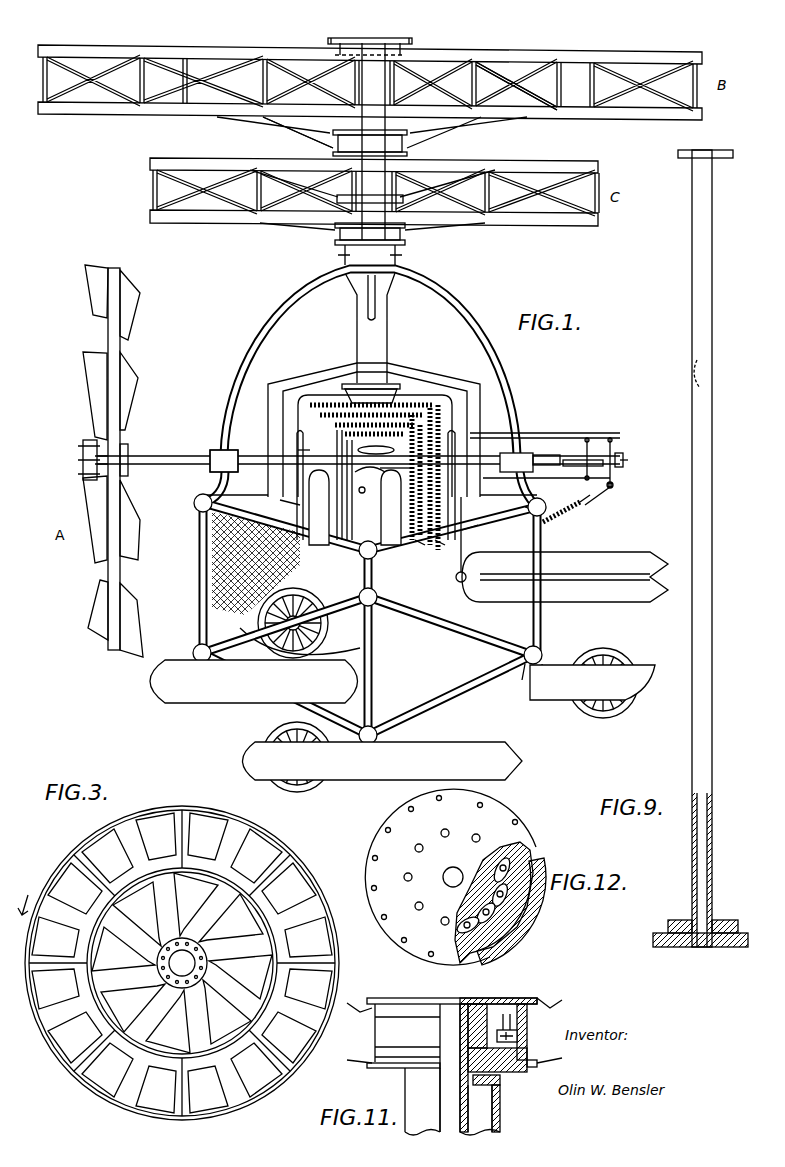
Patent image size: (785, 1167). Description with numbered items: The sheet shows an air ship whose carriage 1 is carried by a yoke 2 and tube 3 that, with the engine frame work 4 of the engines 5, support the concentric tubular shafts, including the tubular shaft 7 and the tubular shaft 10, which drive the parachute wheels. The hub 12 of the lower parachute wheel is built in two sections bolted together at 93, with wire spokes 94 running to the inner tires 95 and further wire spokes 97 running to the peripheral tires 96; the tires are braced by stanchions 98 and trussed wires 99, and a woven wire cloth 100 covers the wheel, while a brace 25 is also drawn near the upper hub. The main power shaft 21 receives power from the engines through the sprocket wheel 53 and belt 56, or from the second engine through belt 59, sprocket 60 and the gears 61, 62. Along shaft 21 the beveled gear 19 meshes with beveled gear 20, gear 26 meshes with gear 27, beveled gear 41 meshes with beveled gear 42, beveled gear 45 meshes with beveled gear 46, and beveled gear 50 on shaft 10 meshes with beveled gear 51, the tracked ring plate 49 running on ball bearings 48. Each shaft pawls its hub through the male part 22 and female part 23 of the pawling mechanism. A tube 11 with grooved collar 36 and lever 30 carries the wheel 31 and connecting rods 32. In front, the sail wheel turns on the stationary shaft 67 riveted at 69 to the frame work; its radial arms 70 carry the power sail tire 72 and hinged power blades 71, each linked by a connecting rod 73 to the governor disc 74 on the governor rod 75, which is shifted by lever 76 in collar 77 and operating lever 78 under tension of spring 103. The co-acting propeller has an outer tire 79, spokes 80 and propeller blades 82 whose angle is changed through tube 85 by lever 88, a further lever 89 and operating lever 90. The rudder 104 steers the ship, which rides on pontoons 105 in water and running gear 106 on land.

In FIG. 1, the carriage 1 is at (505, 400).
In FIG. 1, the yoke 2 is at (340, 255).
In FIG. 1, the tube 3 is at (357, 333).
In FIG. 1, the engine frame work 4 is at (445, 372).
In FIG. 1, the engines 5 is at (355, 507).
In FIG. 11, the tubular shaft 7 is at (492, 1115).
In FIG. 9, the tubular shaft 10 is at (712, 480).
In FIG. 1, the tube 11 is at (372, 45).
In FIG. 1, the hub 12 is at (404, 200).
In FIG. 11, the hub 12 is at (420, 1085).
In FIG. 1, the beveled gear 19 is at (322, 413).
In FIG. 1, the beveled gear 20 is at (459, 555).
In FIG. 1, the main power shaft 21 is at (300, 455).
In FIG. 12, the male part of the pawling mechanism 22 is at (520, 852).
In FIG. 11, the male part of the pawling mechanism 22 is at (507, 1014).
In FIG. 1, the female part of the pawl 23 is at (412, 141).
In FIG. 12, the female part of the pawl 23 is at (530, 905).
In FIG. 11, the female part of the pawl 23 is at (505, 1078).
In FIG. 1, the brace 25 is at (310, 185).
In FIG. 1, the gear 26 is at (310, 405).
In FIG. 1, the gear 27 is at (440, 540).
In FIG. 1, the lever 30 is at (388, 472).
In FIG. 1, the wheel 31 is at (400, 38).
In FIG. 1, the connecting rods 32 is at (412, 41).
In FIG. 1, the annularly grooved collar 36 is at (358, 450).
In FIG. 1, the beveled gear 41 is at (335, 425).
In FIG. 1, the beveled gear 42 is at (420, 540).
In FIG. 1, the beveled gear 45 is at (345, 434).
In FIG. 1, the beveled gear 46 is at (348, 480).
In FIG. 9, the ball bearings 48 is at (680, 922).
In FIG. 9, the tracked ring plate 49 is at (725, 922).
In FIG. 1, the beveled gear 50 is at (395, 440).
In FIG. 9, the beveled gear 50 is at (672, 947).
In FIG. 1, the beveled gear 51 is at (360, 493).
In FIG. 1, the sprocket wheel 53 is at (298, 450).
In FIG. 1, the belt 56 is at (290, 500).
In FIG. 1, the belt 59 is at (530, 510).
In FIG. 1, the sprocket 60 is at (456, 440).
In FIG. 1, the gear 61 is at (470, 530).
In FIG. 1, the gear 62 is at (448, 412).
In FIG. 1, the stationary shaft 67 is at (218, 452).
In FIG. 1, the rivet 69 is at (303, 470).
In FIG. 3, the radial arms 70 is at (180, 855).
In FIG. 1, the power blades 71 is at (137, 380).
In FIG. 3, the power blades 71 is at (110, 998).
In FIG. 1, the power sail tire 72 is at (105, 348).
In FIG. 3, the power sail tire 72 is at (210, 870).
In FIG. 1, the connecting rod 73 is at (85, 442).
In FIG. 1, the governor disc 74 is at (470, 135).
In FIG. 3, the governor disc 74 is at (212, 960).
In FIG. 1, the governor and operating rod 75 is at (622, 462).
In FIG. 1, the lever 76 is at (614, 484).
In FIG. 1, the collar 77 is at (615, 456).
In FIG. 1, the operating lever 78 is at (560, 518).
In FIG. 1, the outer tire 79 is at (118, 270).
In FIG. 3, the outer tire 79 is at (247, 818).
In FIG. 1, the spokes 80 is at (132, 418).
In FIG. 1, the propeller blades 82 is at (140, 308).
In FIG. 3, the propeller blades 82 is at (175, 812).
In FIG. 1, the tube 85 is at (575, 458).
In FIG. 1, the lever 88 is at (598, 493).
In FIG. 1, the lever 89 is at (592, 458).
In FIG. 1, the operating lever 90 is at (560, 480).
In FIG. 12, the bolts 93 is at (405, 950).
In FIG. 11, the bolts 93 is at (480, 1012).
In FIG. 11, the wire spokes 94 is at (355, 1012).
In FIG. 1, the tires 95 is at (575, 55).
In FIG. 1, the peripheral tires 96 is at (703, 112).
In FIG. 1, the wire spokes 97 is at (660, 117).
In FIG. 1, the stanchions 98 is at (495, 70).
In FIG. 1, the trussed wires 99 is at (530, 70).
In FIG. 1, the woven wire cloth 100 is at (220, 545).
In FIG. 1, the spring 103 is at (578, 505).
In FIG. 1, the rudder 104 is at (620, 556).
In FIG. 1, the pontoons 105 is at (455, 635).
In FIG. 1, the running gear 106 is at (325, 600).